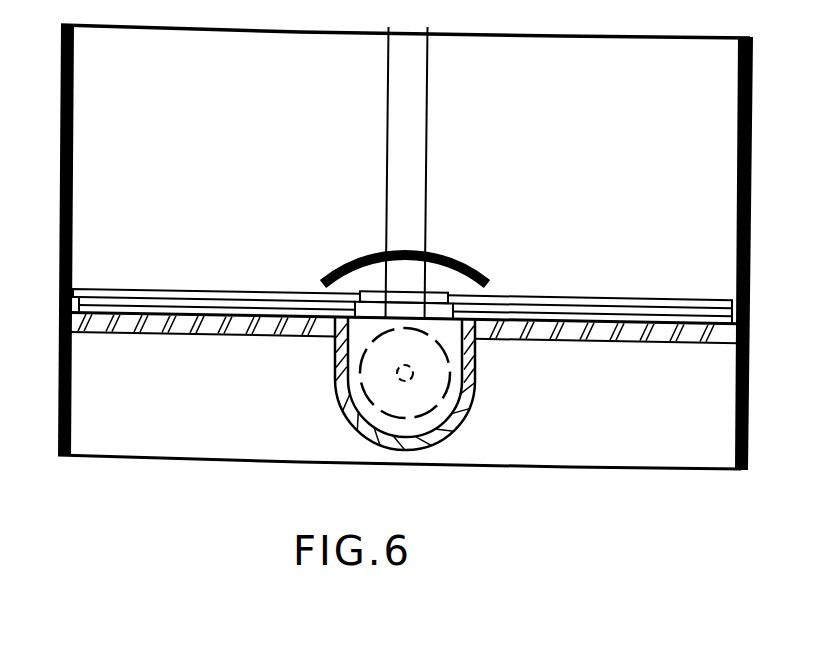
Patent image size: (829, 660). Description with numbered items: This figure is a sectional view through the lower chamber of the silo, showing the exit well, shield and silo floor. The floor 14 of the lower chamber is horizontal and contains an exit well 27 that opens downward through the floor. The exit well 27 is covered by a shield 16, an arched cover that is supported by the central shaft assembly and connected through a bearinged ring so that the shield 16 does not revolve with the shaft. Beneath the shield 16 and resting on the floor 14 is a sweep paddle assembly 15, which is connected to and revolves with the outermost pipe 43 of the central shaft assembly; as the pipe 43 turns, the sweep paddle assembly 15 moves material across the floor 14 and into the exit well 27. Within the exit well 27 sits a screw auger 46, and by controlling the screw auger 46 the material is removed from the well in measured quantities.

The floor 14 is at (596, 336).
The sweep paddle assembly 15 is at (539, 298).
The shield 16 is at (436, 248).
The exit well 27 is at (444, 404).
The outermost pipe 43 is at (408, 99).
The screw auger 46 is at (386, 391).